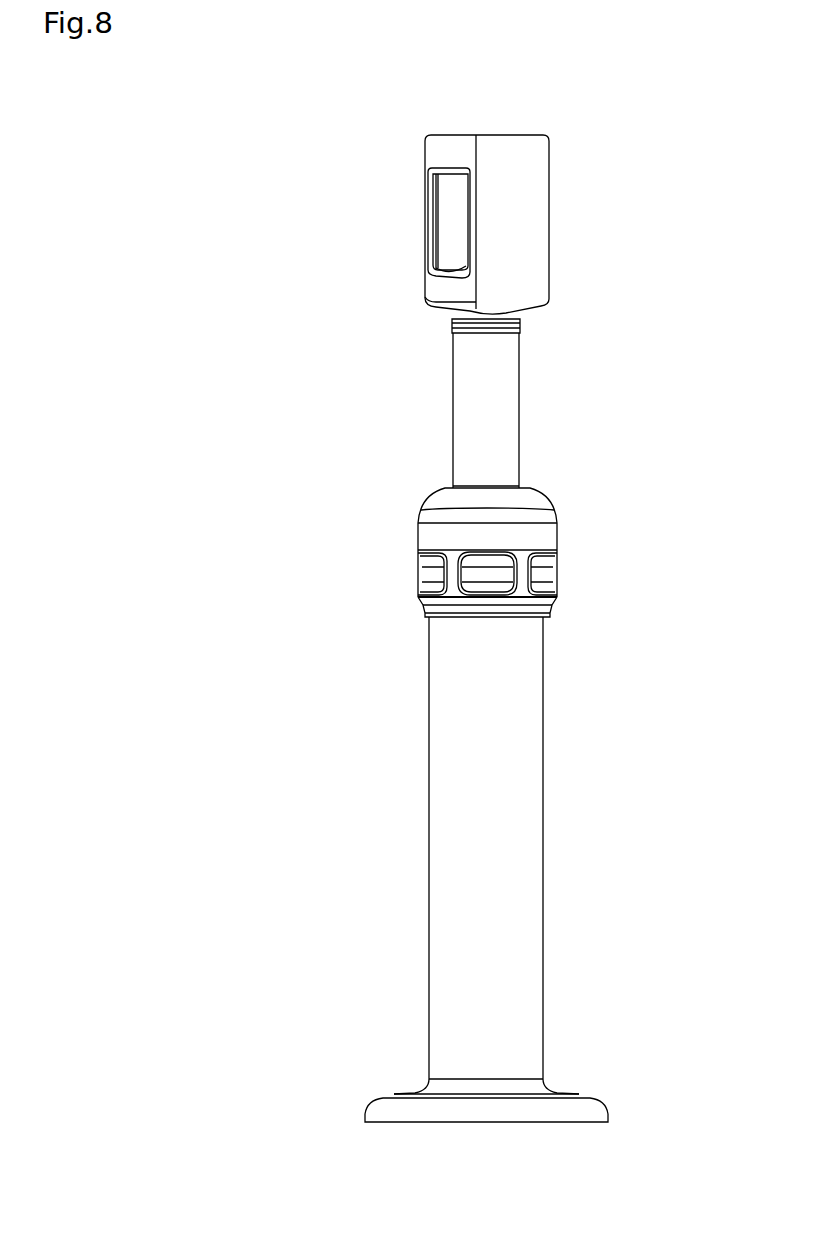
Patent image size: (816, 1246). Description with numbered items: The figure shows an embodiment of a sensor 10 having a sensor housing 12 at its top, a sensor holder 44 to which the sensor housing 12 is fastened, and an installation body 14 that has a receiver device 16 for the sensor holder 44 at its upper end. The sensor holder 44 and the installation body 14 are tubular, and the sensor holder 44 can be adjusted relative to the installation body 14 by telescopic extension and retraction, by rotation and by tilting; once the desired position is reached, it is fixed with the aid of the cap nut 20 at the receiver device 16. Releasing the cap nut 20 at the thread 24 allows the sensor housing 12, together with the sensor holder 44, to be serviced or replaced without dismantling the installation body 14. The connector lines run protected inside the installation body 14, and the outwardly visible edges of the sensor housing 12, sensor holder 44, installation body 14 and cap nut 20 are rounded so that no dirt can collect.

The sensor 10 is at (571, 256).
The sensor housing 12 is at (510, 183).
The installation body 14 is at (522, 752).
The receiver device 16 is at (393, 585).
The cap nut 20 is at (543, 538).
The thread 24 is at (571, 575).
The sensor holder 44 is at (510, 443).